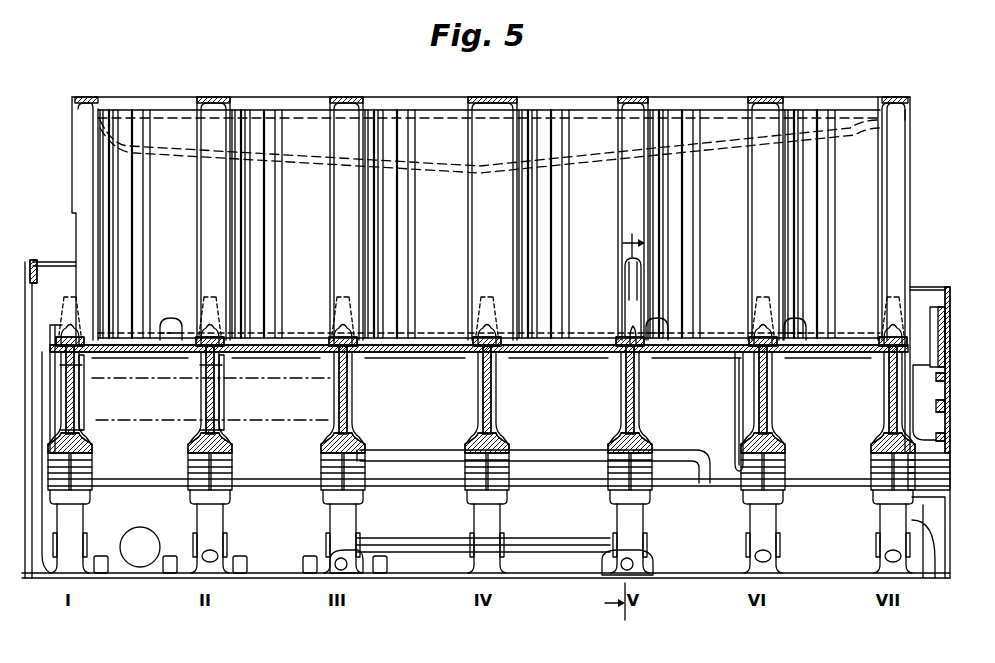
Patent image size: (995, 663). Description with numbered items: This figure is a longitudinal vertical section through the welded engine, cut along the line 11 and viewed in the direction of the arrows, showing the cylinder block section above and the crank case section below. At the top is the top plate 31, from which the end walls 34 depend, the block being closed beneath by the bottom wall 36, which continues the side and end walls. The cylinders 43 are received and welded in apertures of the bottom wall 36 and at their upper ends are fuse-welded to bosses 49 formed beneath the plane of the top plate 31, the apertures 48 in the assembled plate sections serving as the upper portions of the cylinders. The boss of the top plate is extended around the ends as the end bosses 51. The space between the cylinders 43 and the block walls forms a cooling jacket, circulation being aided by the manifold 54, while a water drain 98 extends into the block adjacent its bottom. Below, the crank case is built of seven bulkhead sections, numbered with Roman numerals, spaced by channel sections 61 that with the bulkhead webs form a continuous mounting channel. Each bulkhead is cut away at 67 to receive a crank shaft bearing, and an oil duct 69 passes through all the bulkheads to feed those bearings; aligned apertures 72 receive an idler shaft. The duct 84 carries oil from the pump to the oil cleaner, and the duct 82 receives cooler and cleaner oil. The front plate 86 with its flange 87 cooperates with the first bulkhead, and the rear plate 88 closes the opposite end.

The section line 11 is at (602, 610).
The top plate 31 is at (770, 100).
The end walls 34 is at (76, 230).
The bottom wall 36 is at (488, 300).
The cylinders 43 is at (95, 168).
The apertures 48 is at (603, 87).
The bosses 49 is at (640, 103).
The end bosses 51 is at (910, 110).
The manifold 54 is at (215, 143).
The channel sections 61 is at (140, 565).
The crank shaft bearing recesses 67 is at (60, 466).
The oil duct 69 is at (563, 353).
The idler shaft apertures 72 is at (203, 426).
The oil duct 82 is at (737, 385).
The oil duct 84 is at (408, 451).
The front plate 86 is at (35, 262).
The flange 87 is at (30, 277).
The rear plate 88 is at (952, 297).
The water drain 98 is at (625, 268).